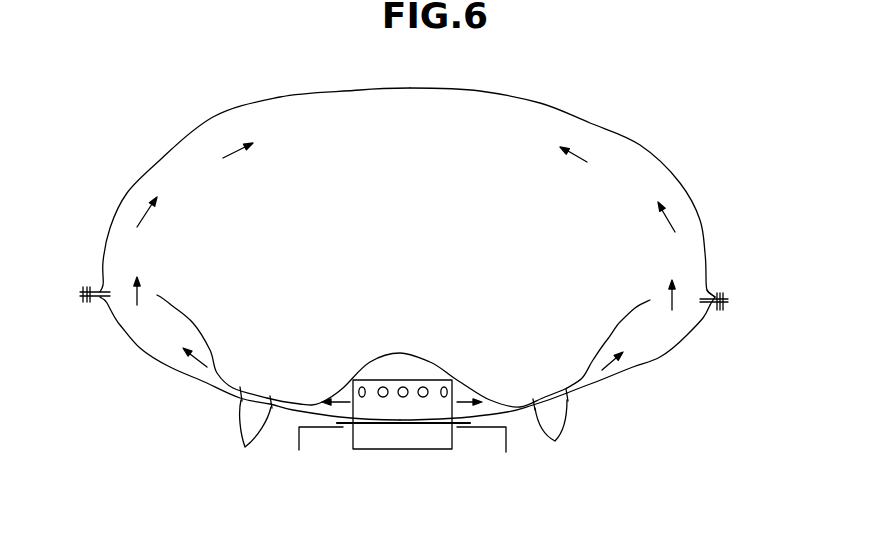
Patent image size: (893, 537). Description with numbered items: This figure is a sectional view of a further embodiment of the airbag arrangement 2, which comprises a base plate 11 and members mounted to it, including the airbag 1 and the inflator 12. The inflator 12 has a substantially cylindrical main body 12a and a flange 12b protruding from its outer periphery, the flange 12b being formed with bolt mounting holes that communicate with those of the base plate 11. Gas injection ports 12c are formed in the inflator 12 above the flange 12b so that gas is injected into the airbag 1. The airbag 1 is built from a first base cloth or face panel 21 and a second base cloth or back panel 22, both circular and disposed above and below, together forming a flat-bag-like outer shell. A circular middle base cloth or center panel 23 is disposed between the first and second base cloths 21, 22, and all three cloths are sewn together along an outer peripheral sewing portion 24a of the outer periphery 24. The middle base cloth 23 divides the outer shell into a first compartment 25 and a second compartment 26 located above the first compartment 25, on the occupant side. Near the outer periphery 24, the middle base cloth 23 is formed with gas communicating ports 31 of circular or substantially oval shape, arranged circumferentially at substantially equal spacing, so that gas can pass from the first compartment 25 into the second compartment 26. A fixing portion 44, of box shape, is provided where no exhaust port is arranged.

The airbag 1 is at (640, 145).
The airbag arrangement 2 is at (611, 96).
The base plate 11 is at (488, 430).
The inflator 12 is at (372, 443).
The main body 12a is at (405, 413).
The flange 12b is at (433, 427).
The gas injection ports 12c is at (405, 383).
The first base cloth 21 is at (678, 183).
The second base cloth 22 is at (660, 360).
The middle base cloth 23 is at (615, 322).
The outer periphery 24 is at (728, 300).
The outer peripheral sewing portion 24a is at (715, 293).
The first compartment 25 is at (148, 330).
The second compartment 26 is at (125, 235).
The gas communicating ports 31 is at (148, 294).
The fixing portion 44 is at (397, 434).